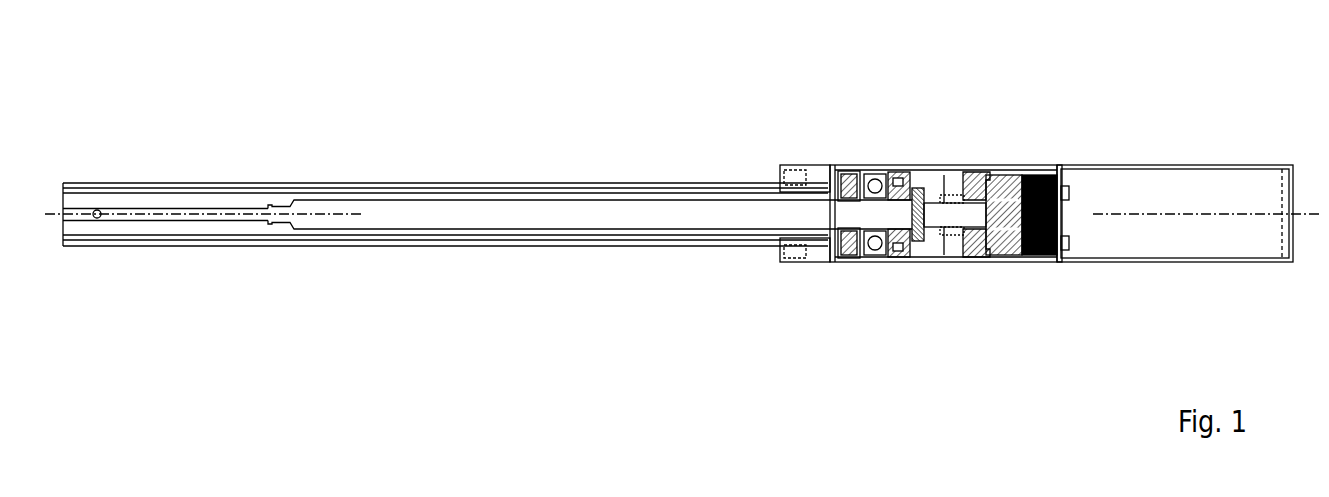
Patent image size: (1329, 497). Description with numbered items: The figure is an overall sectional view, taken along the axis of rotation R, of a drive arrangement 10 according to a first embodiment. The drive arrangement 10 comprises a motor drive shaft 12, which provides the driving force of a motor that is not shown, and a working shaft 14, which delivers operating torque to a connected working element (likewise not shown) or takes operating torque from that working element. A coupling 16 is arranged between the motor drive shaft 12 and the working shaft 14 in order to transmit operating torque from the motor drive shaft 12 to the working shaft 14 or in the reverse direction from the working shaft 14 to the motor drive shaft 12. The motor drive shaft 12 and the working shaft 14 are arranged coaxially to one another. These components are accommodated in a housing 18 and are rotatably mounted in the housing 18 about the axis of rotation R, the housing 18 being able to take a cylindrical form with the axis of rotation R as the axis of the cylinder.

The drive arrangement 10 is at (279, 131).
The motor drive shaft 12 is at (962, 205).
The working shaft 14 is at (408, 207).
The coupling 16 is at (838, 170).
The housing 18 is at (1170, 165).
The axis of rotation R is at (330, 218).